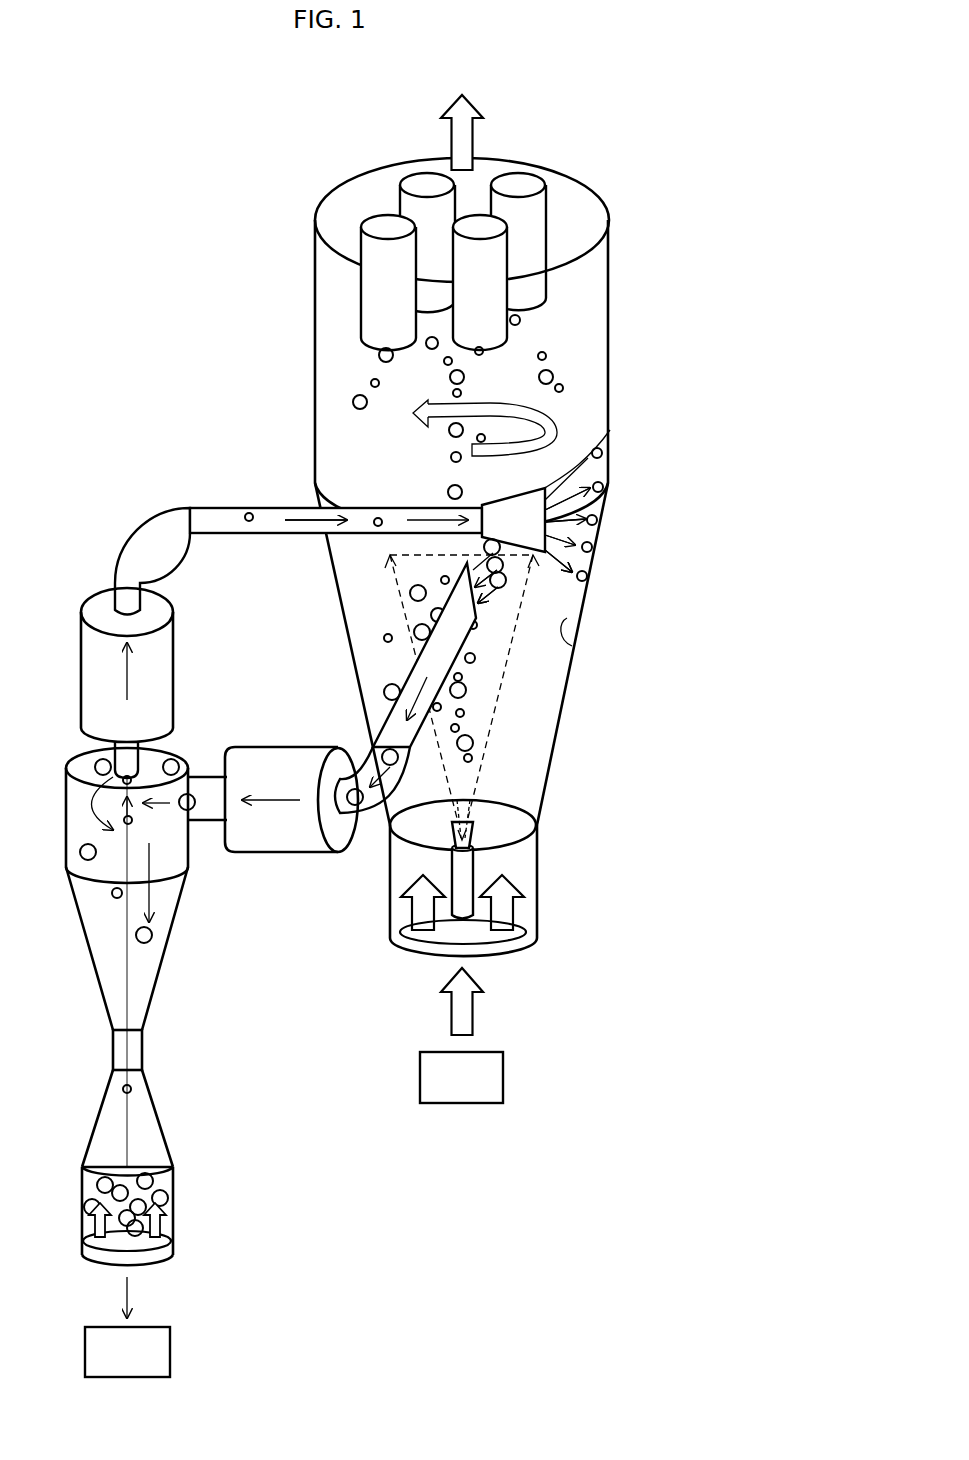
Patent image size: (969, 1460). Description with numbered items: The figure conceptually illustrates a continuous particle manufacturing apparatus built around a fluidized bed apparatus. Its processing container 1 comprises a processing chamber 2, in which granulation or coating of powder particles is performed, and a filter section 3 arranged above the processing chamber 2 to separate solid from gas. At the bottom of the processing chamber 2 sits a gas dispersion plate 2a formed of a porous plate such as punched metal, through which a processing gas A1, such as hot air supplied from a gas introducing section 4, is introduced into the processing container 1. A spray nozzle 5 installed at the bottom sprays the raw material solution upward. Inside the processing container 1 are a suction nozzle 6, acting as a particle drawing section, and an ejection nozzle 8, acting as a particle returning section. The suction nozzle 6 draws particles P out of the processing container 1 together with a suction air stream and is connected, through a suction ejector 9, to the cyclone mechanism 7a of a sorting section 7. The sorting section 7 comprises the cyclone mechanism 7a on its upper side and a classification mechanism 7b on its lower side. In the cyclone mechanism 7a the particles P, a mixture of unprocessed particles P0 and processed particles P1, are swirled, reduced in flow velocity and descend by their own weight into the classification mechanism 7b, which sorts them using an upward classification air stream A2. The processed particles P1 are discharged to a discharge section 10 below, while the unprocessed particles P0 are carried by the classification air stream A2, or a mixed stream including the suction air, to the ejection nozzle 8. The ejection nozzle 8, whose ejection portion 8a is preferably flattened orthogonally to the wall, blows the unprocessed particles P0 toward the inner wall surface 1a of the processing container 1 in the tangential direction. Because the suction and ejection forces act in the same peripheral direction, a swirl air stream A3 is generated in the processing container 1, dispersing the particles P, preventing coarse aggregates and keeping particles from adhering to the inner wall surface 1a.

The processing container 1 is at (588, 605).
The inner wall surface 1a is at (572, 646).
The processing chamber 2 is at (548, 665).
The gas dispersion plate 2a is at (458, 933).
The filter section 3 is at (552, 204).
The gas introducing section 4 is at (470, 1091).
The spray nozzle 5 is at (467, 865).
The suction nozzle 6 is at (408, 678).
The sorting section 7 is at (168, 1078).
The cyclone mechanism 7a is at (177, 837).
The classification mechanism 7b is at (168, 1180).
The ejection nozzle 8 is at (357, 512).
The ejection portion 8a is at (520, 503).
The suction ejector 9 is at (288, 830).
The discharge section 10 is at (143, 1367).
The processing gas A1 is at (473, 132).
The classification air stream A2 is at (157, 1220).
The swirl air stream A3 is at (543, 420).
The particles P is at (506, 582).
The unprocessed particles P0 is at (603, 455).
The processed particles P1 is at (473, 743).